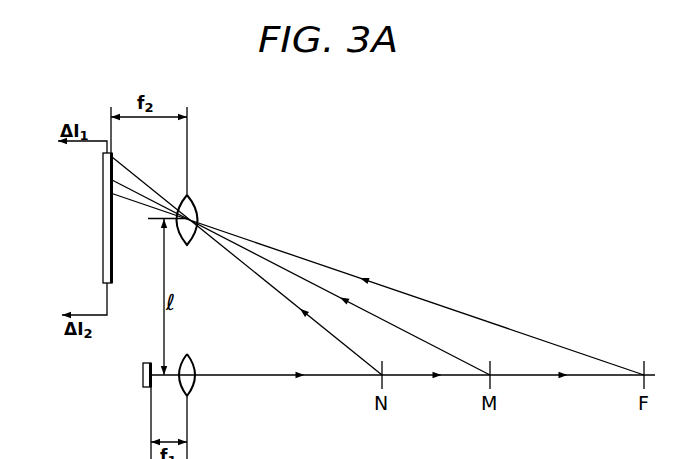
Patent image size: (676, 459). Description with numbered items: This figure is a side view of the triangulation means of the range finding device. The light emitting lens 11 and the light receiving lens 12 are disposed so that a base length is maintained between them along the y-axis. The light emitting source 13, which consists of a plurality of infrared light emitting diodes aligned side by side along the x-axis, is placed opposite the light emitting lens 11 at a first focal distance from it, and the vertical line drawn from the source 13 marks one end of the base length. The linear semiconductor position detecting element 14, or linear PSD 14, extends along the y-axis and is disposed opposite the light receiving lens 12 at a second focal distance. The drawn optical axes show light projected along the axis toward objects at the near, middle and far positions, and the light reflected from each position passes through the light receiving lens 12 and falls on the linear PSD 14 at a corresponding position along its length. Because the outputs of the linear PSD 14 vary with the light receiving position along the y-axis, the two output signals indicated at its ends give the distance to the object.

The light emitting lens 11 is at (195, 383).
The light receiving lens 12 is at (197, 205).
The light emitting source 13 is at (143, 375).
The linear semiconductor position detecting element 14 is at (103, 244).